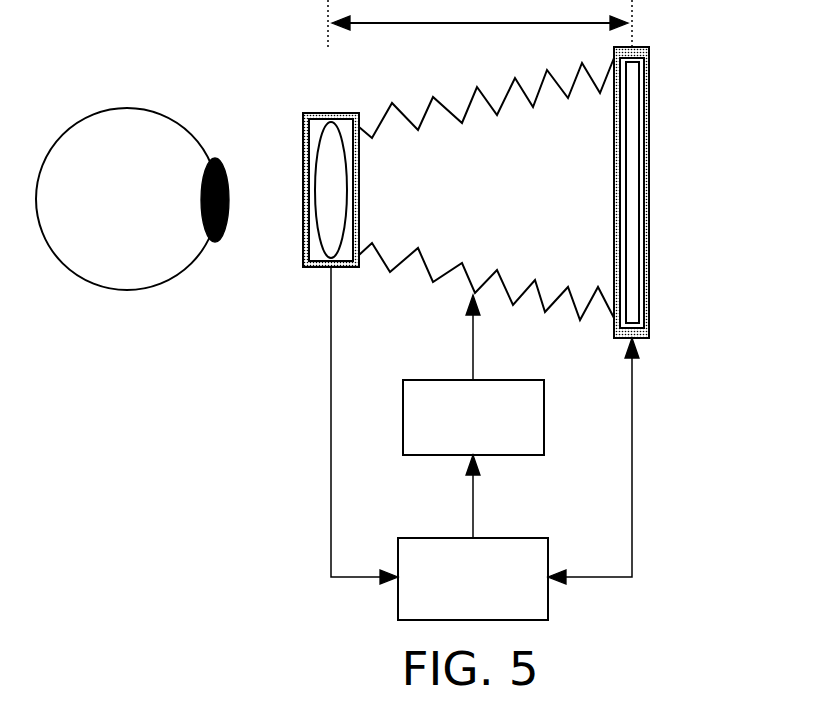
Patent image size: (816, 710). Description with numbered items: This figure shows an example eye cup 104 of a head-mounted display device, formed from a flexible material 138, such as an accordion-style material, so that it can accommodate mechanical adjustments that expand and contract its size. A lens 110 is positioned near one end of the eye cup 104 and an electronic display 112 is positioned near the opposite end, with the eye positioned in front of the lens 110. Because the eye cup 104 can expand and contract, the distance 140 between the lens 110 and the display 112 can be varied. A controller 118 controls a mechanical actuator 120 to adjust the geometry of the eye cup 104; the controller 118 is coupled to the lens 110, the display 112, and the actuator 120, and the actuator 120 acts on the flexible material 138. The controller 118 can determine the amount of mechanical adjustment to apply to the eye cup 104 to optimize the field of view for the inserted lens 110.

The eye cup 104 is at (486, 189).
The lens 110 is at (323, 226).
The electronic display 112 is at (632, 288).
The controller 118 is at (456, 601).
The mechanical actuator 120 is at (456, 439).
The flexible material 138 is at (435, 98).
The distance 140 is at (458, 23).